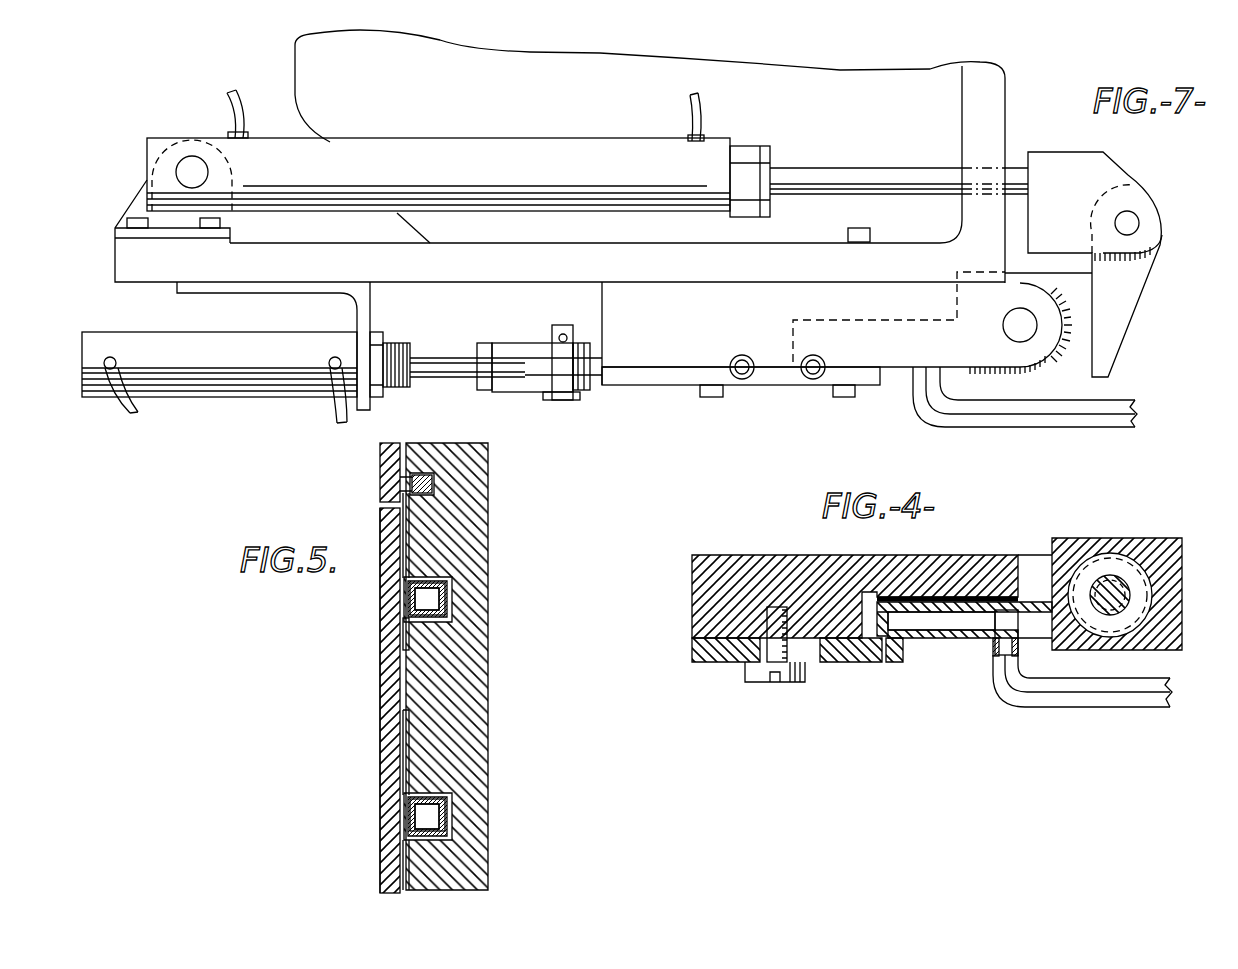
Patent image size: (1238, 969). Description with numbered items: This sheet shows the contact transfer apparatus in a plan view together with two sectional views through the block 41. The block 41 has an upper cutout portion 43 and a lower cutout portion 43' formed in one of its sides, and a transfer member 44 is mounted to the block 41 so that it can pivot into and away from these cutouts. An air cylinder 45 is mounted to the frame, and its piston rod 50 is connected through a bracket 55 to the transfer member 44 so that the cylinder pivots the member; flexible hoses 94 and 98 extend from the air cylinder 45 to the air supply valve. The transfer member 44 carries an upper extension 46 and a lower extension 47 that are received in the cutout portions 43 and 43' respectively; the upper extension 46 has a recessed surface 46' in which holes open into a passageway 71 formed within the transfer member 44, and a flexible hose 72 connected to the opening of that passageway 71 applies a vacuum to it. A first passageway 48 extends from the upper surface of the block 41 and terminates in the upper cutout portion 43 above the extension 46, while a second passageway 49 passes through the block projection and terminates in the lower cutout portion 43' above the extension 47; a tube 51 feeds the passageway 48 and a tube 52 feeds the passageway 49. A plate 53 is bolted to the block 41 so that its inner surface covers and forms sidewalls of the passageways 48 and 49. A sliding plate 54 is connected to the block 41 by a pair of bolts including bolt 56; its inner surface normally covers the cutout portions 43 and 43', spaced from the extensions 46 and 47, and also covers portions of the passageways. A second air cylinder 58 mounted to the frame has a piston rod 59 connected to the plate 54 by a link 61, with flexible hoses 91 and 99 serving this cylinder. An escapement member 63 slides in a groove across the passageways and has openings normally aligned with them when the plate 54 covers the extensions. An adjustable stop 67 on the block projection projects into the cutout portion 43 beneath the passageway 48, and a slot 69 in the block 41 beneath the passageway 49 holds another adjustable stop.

In FIG. 7, the block 41 is at (623, 297).
In FIG. 5, the block 41 is at (470, 687).
In FIG. 4, the block 41 is at (717, 553).
In FIG. 5, the upper cutout portion 43 is at (478, 575).
In FIG. 4, the upper cutout portion 43 is at (961, 583).
In FIG. 5, the lower cutout portion 43' is at (477, 796).
In FIG. 7, the transfer member 44 is at (888, 325).
In FIG. 4, the transfer member 44 is at (1040, 628).
In FIG. 7, the air cylinder 45 is at (532, 148).
In FIG. 5, the upper extension 46 is at (476, 594).
In FIG. 4, the recessed surface 46' is at (880, 672).
In FIG. 5, the lower extension 47 is at (452, 813).
In FIG. 5, the first passageway 48 is at (405, 528).
In FIG. 5, the second passageway 49 is at (405, 738).
In FIG. 7, the piston rod 50 is at (857, 173).
In FIG. 7, the tube 51 is at (803, 373).
In FIG. 7, the tube 52 is at (742, 355).
In FIG. 7, the plate 53 is at (657, 375).
In FIG. 5, the plate 53 is at (405, 475).
In FIG. 5, the plate 54 is at (385, 673).
In FIG. 4, the plate 54 is at (837, 657).
In FIG. 7, the bracket 55 is at (1130, 298).
In FIG. 4, the bolt 56 is at (760, 680).
In FIG. 7, the air cylinder 58 is at (232, 385).
In FIG. 7, the piston rod 59 is at (430, 362).
In FIG. 7, the link 61 is at (517, 378).
In FIG. 5, the escapement member 63 is at (428, 485).
In FIG. 5, the adjustable stop 67 is at (410, 630).
In FIG. 5, the slot 69 is at (403, 853).
In FIG. 5, the passageway 71 is at (435, 607).
In FIG. 4, the passageway 71 is at (943, 615).
In FIG. 7, the flexible hose 72 is at (1022, 418).
In FIG. 4, the flexible hose 72 is at (1092, 692).
In FIG. 7, the flexible hose 91 is at (327, 418).
In FIG. 7, the flexible hose 94 is at (690, 110).
In FIG. 7, the flexible hose 98 is at (237, 97).
In FIG. 7, the flexible hose 99 is at (127, 407).